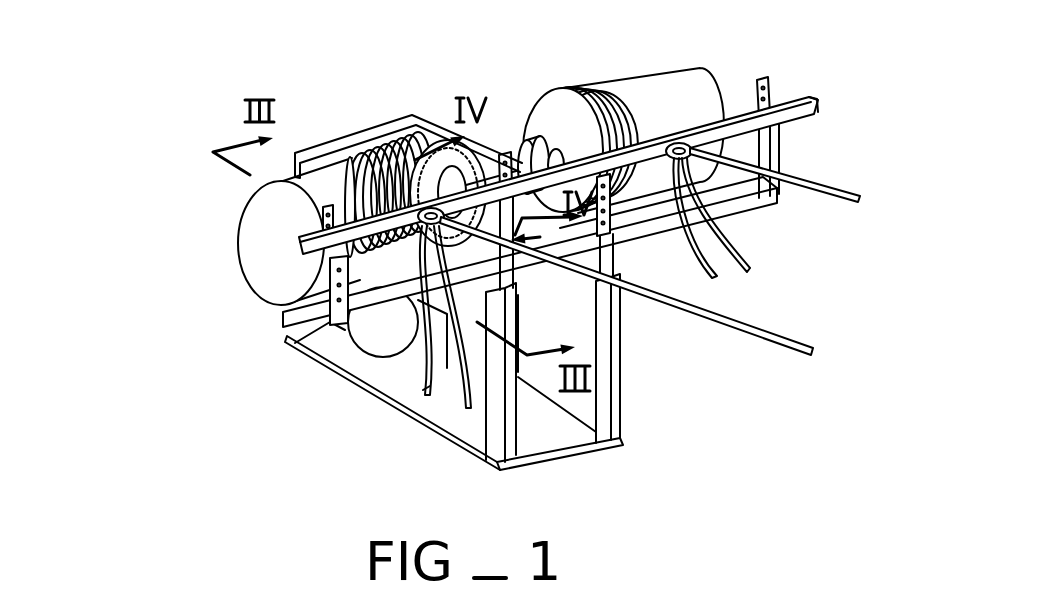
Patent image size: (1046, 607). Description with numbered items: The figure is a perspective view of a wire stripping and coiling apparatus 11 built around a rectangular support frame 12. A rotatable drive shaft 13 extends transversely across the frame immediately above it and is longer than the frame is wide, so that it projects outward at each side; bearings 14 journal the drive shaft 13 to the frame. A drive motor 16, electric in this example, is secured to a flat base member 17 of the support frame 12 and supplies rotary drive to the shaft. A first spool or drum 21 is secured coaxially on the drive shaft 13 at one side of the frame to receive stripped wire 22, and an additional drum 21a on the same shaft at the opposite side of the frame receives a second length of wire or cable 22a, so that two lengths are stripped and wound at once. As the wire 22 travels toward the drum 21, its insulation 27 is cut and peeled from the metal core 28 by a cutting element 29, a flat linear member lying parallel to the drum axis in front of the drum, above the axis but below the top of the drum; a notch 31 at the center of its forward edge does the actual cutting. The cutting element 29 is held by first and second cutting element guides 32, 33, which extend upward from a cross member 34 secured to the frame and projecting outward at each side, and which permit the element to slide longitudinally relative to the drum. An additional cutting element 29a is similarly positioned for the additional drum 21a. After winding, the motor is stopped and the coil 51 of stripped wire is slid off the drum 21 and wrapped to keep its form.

The wire stripping and coiling apparatus 11 is at (720, 394).
The support frame 12 is at (622, 370).
The drive shaft 13 is at (558, 165).
The bearings 14 is at (534, 148).
The drive motor 16 is at (363, 335).
The flat base member 17 is at (472, 427).
The first spool or drum 21 is at (242, 256).
The additional drum 21a is at (676, 100).
The wire 22 is at (768, 326).
The cable 22a is at (831, 194).
The insulation 27 is at (423, 390).
The metal core 28 is at (346, 165).
The cutting element 29 is at (378, 313).
The additional cutting element 29a is at (796, 99).
The notch 31 is at (409, 160).
The first cutting element guide 32 is at (600, 262).
The second cutting element guide 33 is at (295, 343).
The cross member 34 is at (742, 214).
The coil 51 is at (379, 164).